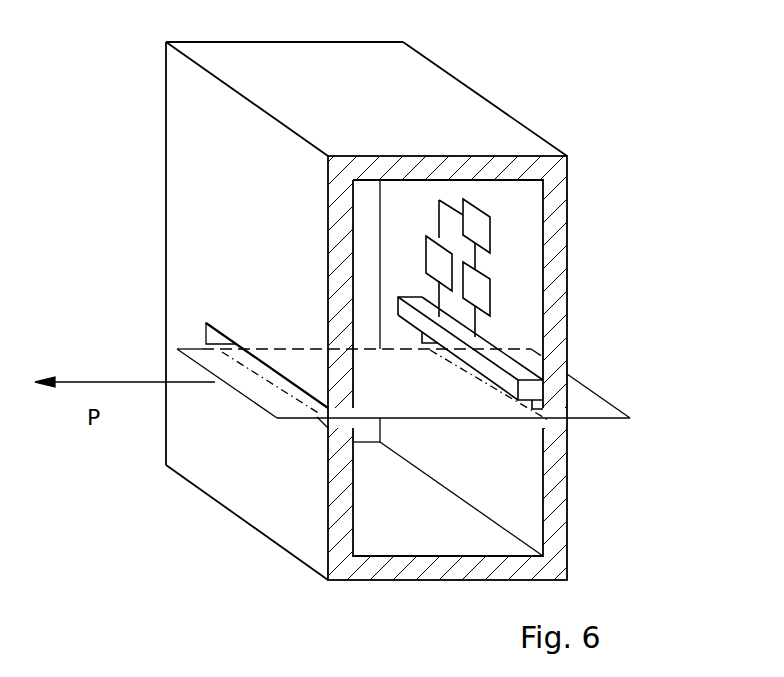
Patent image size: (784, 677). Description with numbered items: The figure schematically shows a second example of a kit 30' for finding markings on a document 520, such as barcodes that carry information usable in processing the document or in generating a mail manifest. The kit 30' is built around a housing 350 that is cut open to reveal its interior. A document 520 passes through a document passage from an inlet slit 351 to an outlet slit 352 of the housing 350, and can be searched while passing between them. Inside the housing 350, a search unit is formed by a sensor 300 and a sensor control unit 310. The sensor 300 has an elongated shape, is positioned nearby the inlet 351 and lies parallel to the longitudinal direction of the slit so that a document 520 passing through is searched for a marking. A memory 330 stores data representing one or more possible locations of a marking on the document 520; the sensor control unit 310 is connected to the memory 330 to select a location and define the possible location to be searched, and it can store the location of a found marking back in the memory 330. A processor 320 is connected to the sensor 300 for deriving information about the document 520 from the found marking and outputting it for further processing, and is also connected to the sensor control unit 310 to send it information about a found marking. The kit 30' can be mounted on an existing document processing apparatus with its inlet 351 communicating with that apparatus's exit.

The kit 30' is at (127, 551).
The sensor 300 is at (520, 373).
The sensor control unit 310 is at (480, 291).
The processor 320 is at (437, 257).
The memory 330 is at (481, 230).
The housing 350 is at (208, 133).
The inlet slit 351 is at (553, 425).
The outlet slit 352 is at (217, 337).
The document 520 is at (426, 394).